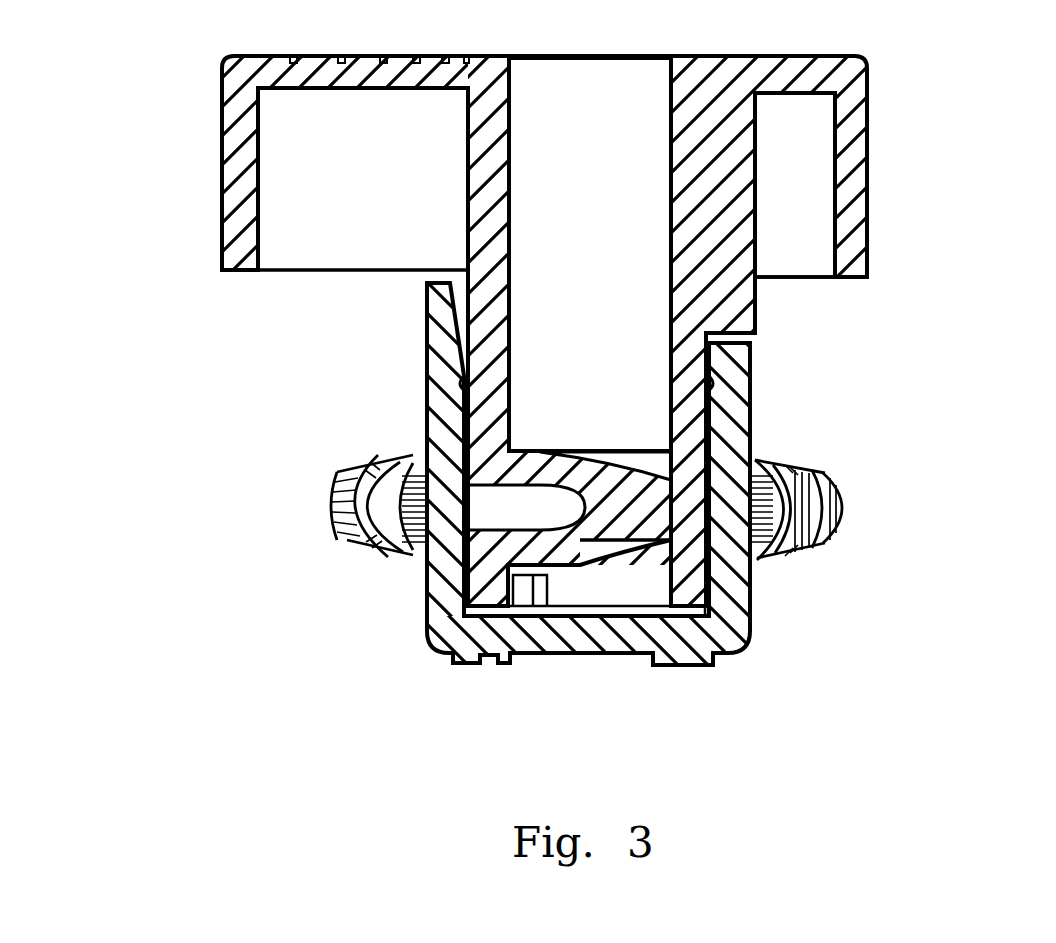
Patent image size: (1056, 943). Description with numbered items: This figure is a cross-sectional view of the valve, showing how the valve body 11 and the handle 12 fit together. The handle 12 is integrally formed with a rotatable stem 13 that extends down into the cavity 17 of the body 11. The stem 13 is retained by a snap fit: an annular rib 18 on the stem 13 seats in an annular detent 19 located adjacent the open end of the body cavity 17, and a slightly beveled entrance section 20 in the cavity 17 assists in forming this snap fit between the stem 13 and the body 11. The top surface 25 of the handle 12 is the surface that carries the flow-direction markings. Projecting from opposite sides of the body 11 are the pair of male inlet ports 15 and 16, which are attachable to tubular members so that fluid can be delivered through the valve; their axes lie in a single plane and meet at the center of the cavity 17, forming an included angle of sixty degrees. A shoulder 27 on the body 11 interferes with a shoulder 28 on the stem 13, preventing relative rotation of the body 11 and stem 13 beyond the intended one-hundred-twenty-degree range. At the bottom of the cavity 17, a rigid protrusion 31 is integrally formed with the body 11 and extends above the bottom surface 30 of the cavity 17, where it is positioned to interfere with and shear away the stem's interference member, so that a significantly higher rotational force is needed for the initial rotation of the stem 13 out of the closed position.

The valve body 11 is at (426, 435).
The handle 12 is at (270, 56).
The rotatable stem 13 is at (466, 409).
The male inlet port 15 is at (820, 550).
The male inlet port 16 is at (348, 543).
The body cavity 17 is at (753, 456).
The annular rib 18 is at (753, 407).
The annular detent 19 is at (753, 427).
The beveled entrance section 20 is at (753, 367).
The top surface 25 is at (840, 58).
The shoulder 27 is at (427, 308).
The shoulder 28 is at (755, 290).
The bottom surface 30 is at (600, 612).
The rigid protrusion 31 is at (517, 610).